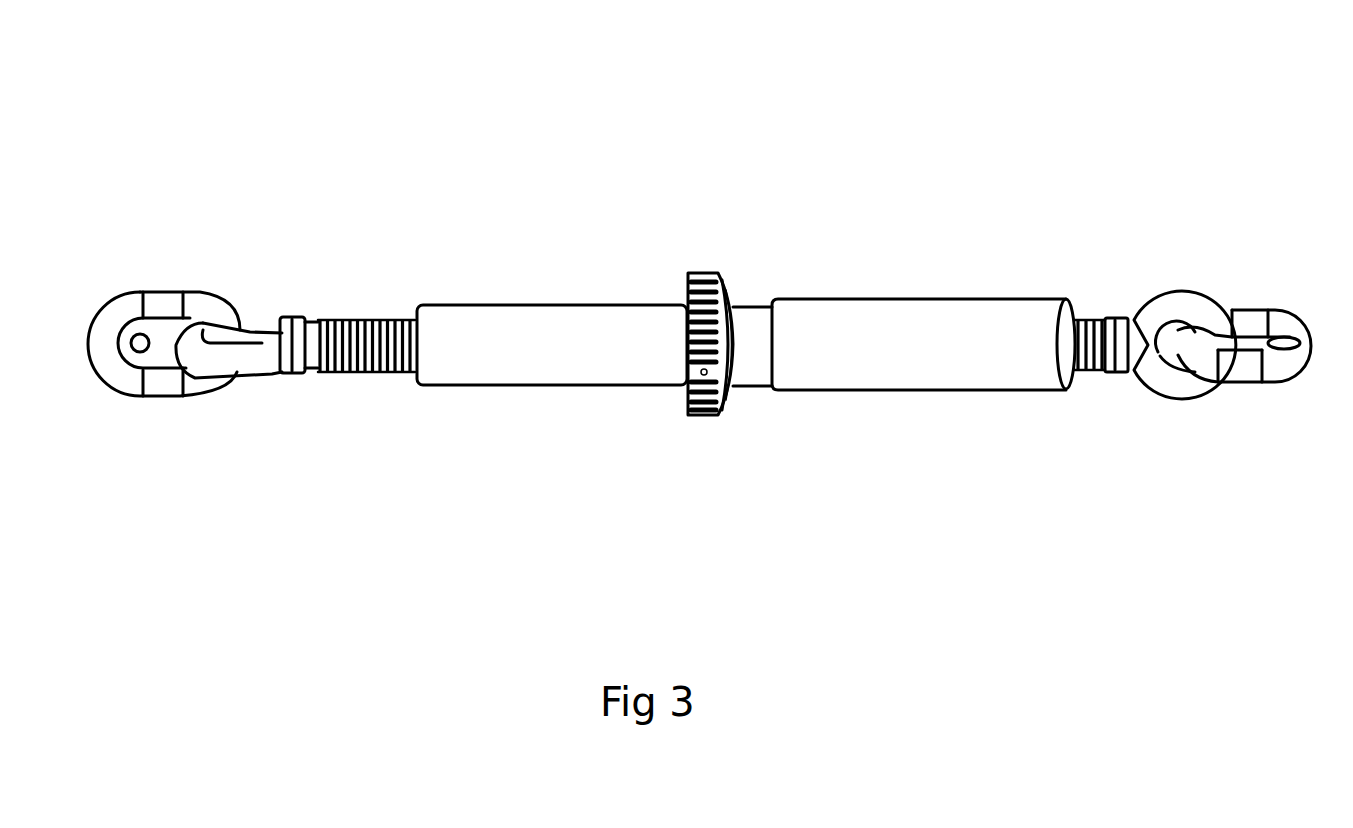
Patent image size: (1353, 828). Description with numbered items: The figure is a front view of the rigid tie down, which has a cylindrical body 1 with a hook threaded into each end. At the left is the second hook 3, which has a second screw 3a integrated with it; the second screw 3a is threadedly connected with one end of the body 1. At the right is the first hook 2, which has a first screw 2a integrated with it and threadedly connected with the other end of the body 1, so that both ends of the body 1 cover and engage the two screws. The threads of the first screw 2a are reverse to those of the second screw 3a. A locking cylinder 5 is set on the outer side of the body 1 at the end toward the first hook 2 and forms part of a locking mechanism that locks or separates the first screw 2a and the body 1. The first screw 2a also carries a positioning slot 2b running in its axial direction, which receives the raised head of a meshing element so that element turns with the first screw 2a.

The body 1 is at (559, 345).
The locking cylinder 5 is at (947, 318).
The second hook 3 is at (262, 338).
The second screw 3a is at (347, 318).
The first hook 2 is at (1207, 317).
The first screw 2a is at (1110, 318).
The positioning slot 2b is at (1088, 368).